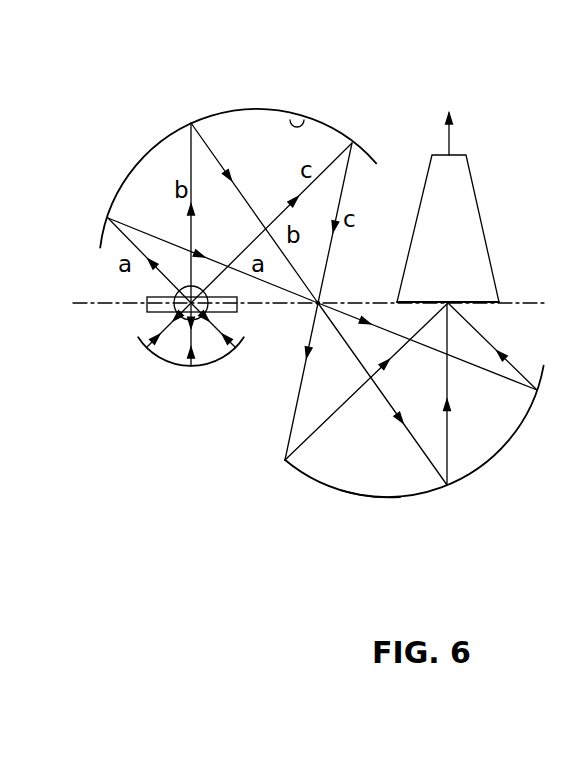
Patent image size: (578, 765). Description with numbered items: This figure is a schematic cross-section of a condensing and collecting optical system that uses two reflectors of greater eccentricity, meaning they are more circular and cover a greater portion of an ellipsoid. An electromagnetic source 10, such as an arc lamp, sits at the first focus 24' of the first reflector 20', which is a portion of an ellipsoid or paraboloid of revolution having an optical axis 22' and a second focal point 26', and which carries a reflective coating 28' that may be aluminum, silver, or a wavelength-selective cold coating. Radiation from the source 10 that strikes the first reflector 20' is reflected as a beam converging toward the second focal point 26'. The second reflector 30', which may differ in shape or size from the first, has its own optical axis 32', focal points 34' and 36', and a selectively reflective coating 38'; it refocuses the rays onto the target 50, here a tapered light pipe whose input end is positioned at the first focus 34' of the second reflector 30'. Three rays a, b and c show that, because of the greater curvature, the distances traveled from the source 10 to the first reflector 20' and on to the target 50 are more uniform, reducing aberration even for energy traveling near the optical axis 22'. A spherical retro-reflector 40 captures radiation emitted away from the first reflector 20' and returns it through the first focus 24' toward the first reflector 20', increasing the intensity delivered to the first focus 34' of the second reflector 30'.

The electromagnetic source 10 is at (157, 312).
The first reflector 20' is at (238, 147).
The optical axis 22' is at (210, 355).
The first focus of the first reflector 24' is at (156, 289).
The second focal point of the first reflector 26' is at (294, 381).
The reflective coating 28' is at (332, 109).
The second reflector 30' is at (414, 464).
The optical axis of the second reflector 32' is at (355, 292).
The first focus of the second reflector 34' is at (474, 284).
The second focal point of the second reflector 36' is at (363, 223).
The coating 38' is at (370, 463).
The retro-reflector 40 is at (182, 367).
The target 50 is at (483, 222).